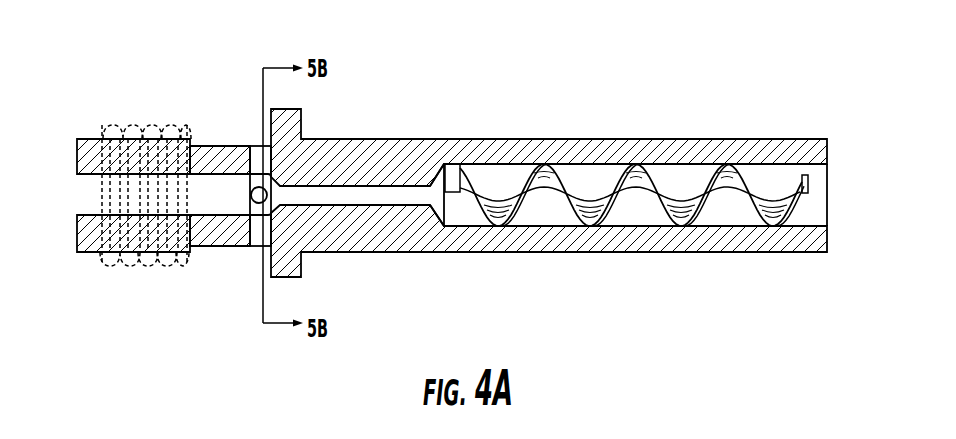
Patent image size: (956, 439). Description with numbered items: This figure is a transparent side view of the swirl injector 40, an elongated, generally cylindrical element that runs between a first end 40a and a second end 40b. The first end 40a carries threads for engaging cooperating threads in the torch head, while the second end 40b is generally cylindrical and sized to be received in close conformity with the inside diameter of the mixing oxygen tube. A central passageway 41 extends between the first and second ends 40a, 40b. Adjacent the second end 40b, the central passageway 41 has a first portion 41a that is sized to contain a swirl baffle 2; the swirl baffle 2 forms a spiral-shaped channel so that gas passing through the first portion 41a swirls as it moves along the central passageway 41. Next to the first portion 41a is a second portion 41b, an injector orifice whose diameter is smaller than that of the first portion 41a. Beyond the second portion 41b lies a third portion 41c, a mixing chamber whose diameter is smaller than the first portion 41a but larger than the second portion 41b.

The swirl injector 40 is at (431, 176).
The first end 40a is at (103, 137).
The second end 40b is at (762, 245).
The central passageway 41 is at (553, 139).
The first portion 41a is at (703, 172).
The second portion 41b is at (392, 190).
The third portion 41c is at (225, 189).
The swirl baffle 2 is at (590, 215).